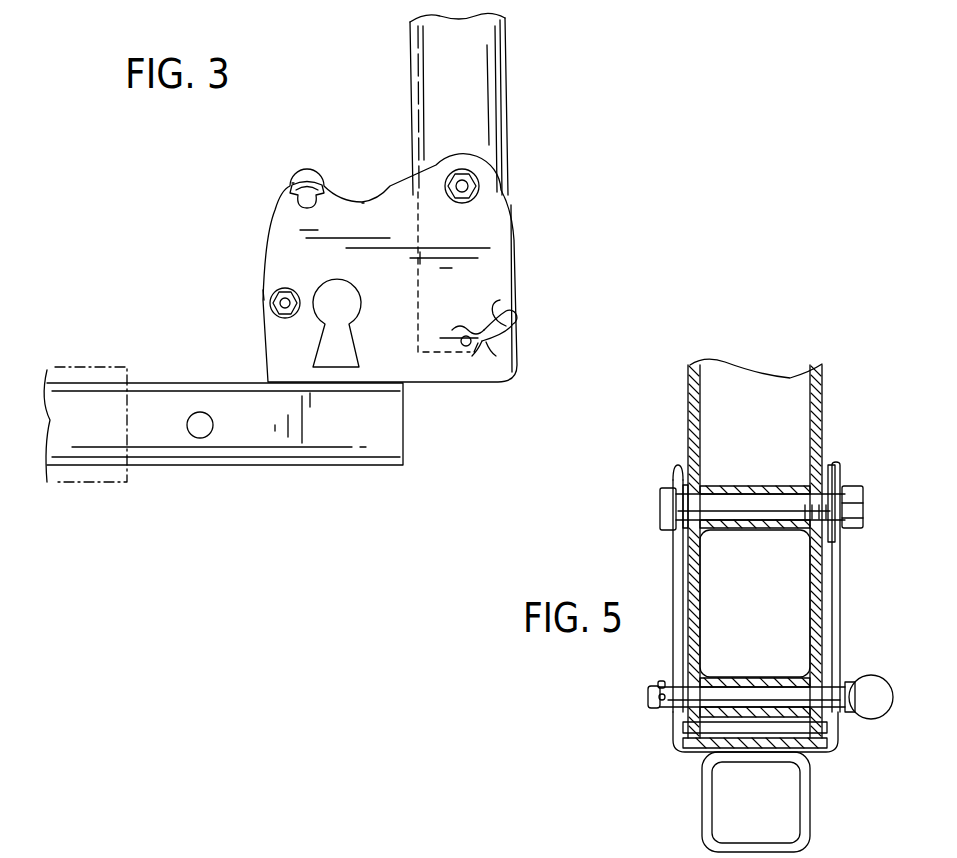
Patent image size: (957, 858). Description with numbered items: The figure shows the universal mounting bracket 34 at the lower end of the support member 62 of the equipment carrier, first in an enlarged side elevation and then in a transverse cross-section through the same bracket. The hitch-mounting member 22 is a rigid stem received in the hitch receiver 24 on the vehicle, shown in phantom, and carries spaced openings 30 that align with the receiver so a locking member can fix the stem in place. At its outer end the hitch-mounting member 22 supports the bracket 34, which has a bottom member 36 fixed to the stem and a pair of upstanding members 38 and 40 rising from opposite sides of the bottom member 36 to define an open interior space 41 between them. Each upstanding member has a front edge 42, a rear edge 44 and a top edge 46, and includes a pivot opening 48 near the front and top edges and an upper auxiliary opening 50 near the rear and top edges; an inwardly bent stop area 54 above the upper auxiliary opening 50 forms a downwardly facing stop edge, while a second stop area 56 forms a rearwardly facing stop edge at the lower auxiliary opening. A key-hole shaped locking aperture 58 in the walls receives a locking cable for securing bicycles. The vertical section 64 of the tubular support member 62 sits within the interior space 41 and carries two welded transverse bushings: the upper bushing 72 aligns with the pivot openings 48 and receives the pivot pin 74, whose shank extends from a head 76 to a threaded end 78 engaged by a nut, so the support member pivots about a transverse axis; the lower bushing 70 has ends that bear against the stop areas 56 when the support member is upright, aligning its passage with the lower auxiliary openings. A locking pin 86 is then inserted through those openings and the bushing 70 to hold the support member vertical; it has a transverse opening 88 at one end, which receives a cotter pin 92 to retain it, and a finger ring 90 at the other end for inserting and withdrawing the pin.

In FIG. 3, the hitch-mounting member 22 is at (243, 472).
In FIG. 5, the hitch-mounting member 22 is at (699, 776).
In FIG. 3, the hitch receiver 24 is at (90, 484).
In FIG. 3, the openings 30 is at (207, 413).
In FIG. 3, the universal mounting bracket 34 is at (258, 230).
In FIG. 5, the bottom member 36 is at (695, 743).
In FIG. 3, the upstanding member 38 is at (486, 207).
In FIG. 5, the upstanding member 38 is at (673, 595).
In FIG. 5, the upstanding member 40 is at (842, 588).
In FIG. 5, the open interior space 41 is at (770, 577).
In FIG. 3, the front edge 42 is at (508, 236).
In FIG. 3, the rear edge 44 is at (263, 268).
In FIG. 3, the top edge 46 is at (385, 190).
In FIG. 5, the pivot opening 48 is at (668, 508).
In FIG. 3, the upper auxiliary opening 50 is at (296, 190).
In FIG. 3, the stop area 54 is at (306, 170).
In FIG. 3, the stop area 56 is at (488, 360).
In FIG. 3, the locking aperture 58 is at (320, 340).
In FIG. 3, the support member 62 is at (514, 34).
In FIG. 5, the support member 62 is at (686, 378).
In FIG. 3, the vertical section 64 is at (510, 97).
In FIG. 5, the bushing 70 is at (757, 677).
In FIG. 5, the bushing 72 is at (790, 485).
In FIG. 5, the pivot pin 74 is at (745, 500).
In FIG. 5, the head 76 is at (673, 487).
In FIG. 3, the threaded end 78 is at (478, 172).
In FIG. 5, the threaded end 78 is at (852, 490).
In FIG. 5, the locking pin 86 is at (788, 697).
In FIG. 5, the transverse opening 88 is at (648, 697).
In FIG. 5, the finger ring 90 is at (872, 719).
In FIG. 3, the cotter pin 92 is at (500, 300).
In FIG. 5, the cotter pin 92 is at (659, 684).